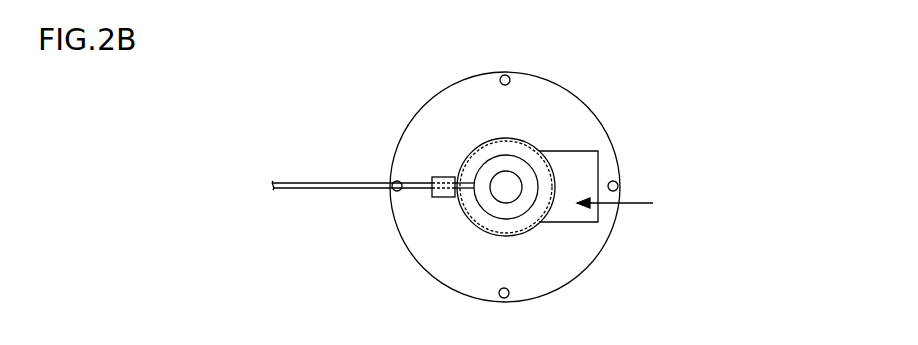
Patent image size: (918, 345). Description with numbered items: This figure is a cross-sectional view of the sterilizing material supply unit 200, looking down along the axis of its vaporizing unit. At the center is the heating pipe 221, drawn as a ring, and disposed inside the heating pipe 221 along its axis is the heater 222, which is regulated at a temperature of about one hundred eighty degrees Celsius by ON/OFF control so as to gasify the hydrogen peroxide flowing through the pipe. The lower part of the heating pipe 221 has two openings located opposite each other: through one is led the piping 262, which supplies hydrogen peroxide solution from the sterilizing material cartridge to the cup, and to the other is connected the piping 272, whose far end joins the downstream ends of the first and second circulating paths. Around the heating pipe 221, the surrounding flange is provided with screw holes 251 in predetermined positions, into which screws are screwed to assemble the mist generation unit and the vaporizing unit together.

The sterilizing material supply unit 200 is at (712, 36).
The heating pipe 221 is at (470, 150).
The heater 222 is at (537, 143).
The screw holes 251 is at (502, 76).
The piping 262 is at (289, 180).
The piping 272 is at (600, 150).